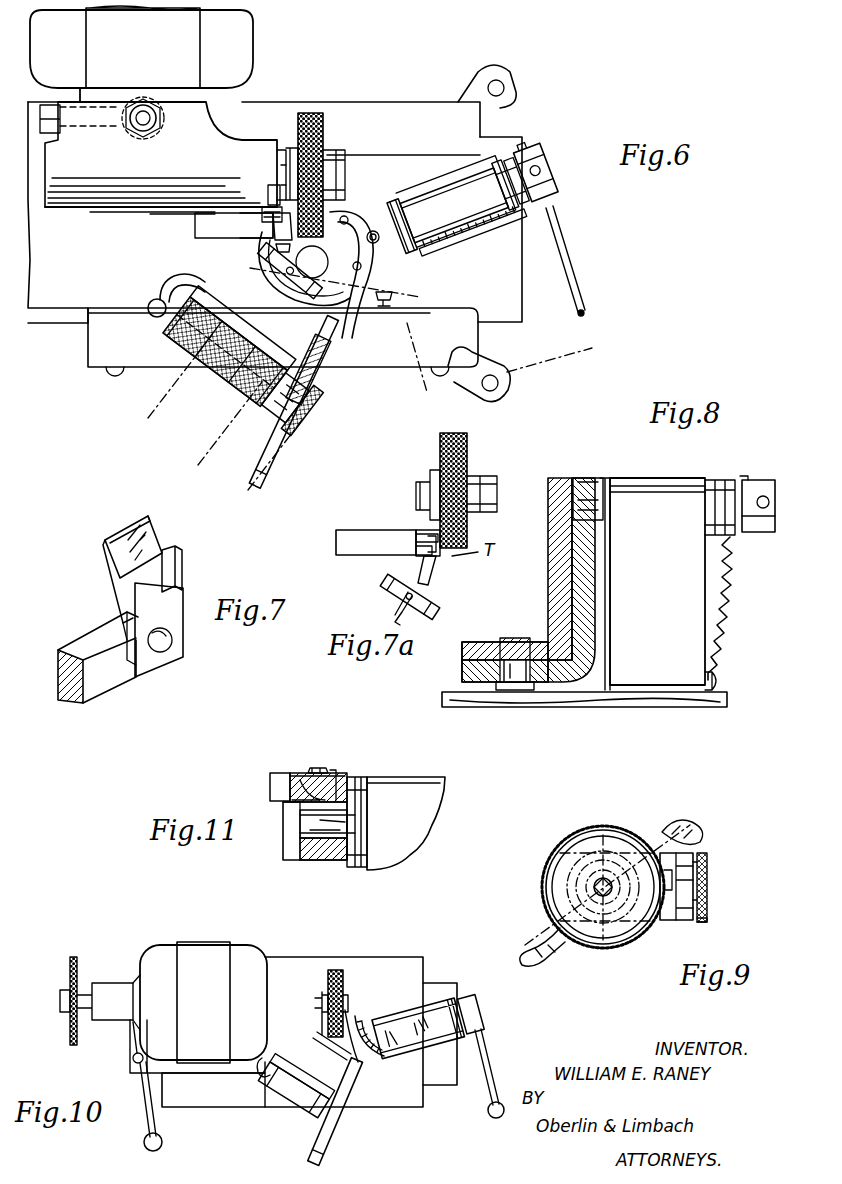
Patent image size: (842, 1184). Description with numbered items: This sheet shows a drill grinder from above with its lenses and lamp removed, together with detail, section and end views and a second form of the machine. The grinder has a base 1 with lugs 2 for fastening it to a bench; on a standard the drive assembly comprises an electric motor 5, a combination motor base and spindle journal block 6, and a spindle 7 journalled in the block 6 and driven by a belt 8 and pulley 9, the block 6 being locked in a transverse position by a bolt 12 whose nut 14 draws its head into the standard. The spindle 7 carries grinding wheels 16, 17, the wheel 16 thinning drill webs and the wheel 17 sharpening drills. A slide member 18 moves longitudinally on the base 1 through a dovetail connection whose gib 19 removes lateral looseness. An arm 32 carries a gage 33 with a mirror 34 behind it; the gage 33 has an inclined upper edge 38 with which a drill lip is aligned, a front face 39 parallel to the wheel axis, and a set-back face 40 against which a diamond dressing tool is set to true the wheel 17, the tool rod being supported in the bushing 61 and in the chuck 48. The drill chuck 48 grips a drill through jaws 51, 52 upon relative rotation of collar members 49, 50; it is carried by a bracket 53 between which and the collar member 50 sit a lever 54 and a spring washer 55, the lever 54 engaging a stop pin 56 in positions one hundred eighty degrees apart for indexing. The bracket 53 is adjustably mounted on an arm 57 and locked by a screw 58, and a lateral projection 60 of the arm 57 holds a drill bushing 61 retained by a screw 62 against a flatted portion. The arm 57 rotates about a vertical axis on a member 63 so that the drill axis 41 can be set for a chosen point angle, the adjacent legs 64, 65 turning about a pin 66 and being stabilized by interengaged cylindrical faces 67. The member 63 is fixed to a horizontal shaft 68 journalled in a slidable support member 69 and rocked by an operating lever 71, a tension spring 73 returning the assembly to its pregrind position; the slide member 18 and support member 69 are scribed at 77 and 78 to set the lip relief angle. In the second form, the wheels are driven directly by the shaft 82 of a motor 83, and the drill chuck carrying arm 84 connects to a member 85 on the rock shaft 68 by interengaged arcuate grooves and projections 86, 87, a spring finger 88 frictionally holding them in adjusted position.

In FIG. 6, the base 1 is at (368, 101).
In FIG. 6, the lugs 2 is at (490, 72).
In FIG. 6, the electric motor 5 is at (254, 58).
In FIG. 6, the combination motor base and spindle journal block 6 is at (220, 148).
In FIG. 6, the spindle 7 is at (282, 140).
In FIG. 6, the belt 8 is at (246, 266).
In FIG. 6, the two-speed pulley 9 is at (135, 409).
In FIG. 6, the bolt 12 is at (138, 126).
In FIG. 6, the nut 14 is at (152, 130).
In FIG. 10, the grinding wheel 16 is at (80, 972).
In FIG. 6, the grinding wheel 17 is at (312, 112).
In FIG. 7A, the grinding wheel 17 is at (470, 446).
In FIG. 10, the grinding wheel 17 is at (341, 970).
In FIG. 6, the slide member 18 is at (510, 292).
In FIG. 6, the gib 19 is at (420, 316).
In FIG. 6, the arm 32 is at (215, 232).
In FIG. 7, the arm 32 is at (105, 688).
In FIG. 7A, the arm 32 is at (336, 543).
In FIG. 6, the gage 33 is at (256, 232).
In FIG. 7, the gage 33 is at (150, 662).
In FIG. 6, the mirror 34 is at (268, 205).
In FIG. 7, the mirror 34 is at (152, 545).
In FIG. 7A, the mirror 34 is at (416, 538).
In FIG. 7, the upper edge 38 is at (118, 580).
In FIG. 7A, the upper edge 38 is at (412, 548).
In FIG. 7, the front face 39 is at (143, 612).
In FIG. 7A, the front face 39 is at (416, 552).
In FIG. 6, the front face 40 is at (272, 192).
In FIG. 7, the front face 40 is at (180, 571).
In FIG. 7A, the front face 40 is at (430, 544).
In FIG. 6, the drill axis 41 is at (242, 396).
In FIG. 6, the drill chuck 48 is at (282, 378).
In FIG. 9, the drill chuck 48 is at (601, 948).
In FIG. 10, the drill chuck 48 is at (310, 1108).
In FIG. 6, the collar member 49 is at (214, 360).
In FIG. 9, the collar member 49 is at (636, 945).
In FIG. 6, the collar member 50 is at (194, 345).
In FIG. 9, the collar member 50 is at (650, 930).
In FIG. 9, the jaw 51 is at (594, 880).
In FIG. 9, the jaw 52 is at (611, 872).
In FIG. 6, the bracket 53 is at (312, 330).
In FIG. 9, the bracket 53 is at (676, 860).
In FIG. 6, the lever 54 is at (160, 300).
In FIG. 9, the lever 54 is at (700, 822).
In FIG. 6, the spring washer 55 is at (205, 278).
In FIG. 6, the stop pin 56 is at (340, 373).
In FIG. 9, the stop pin 56 is at (710, 871).
In FIG. 6, the arm 57 is at (290, 440).
In FIG. 8, the arm 57 is at (556, 578).
In FIG. 6, the screw 58 is at (335, 396).
In FIG. 9, the screw 58 is at (708, 906).
In FIG. 6, the lateral projection 60 is at (332, 280).
In FIG. 7A, the lateral projection 60 is at (440, 594).
In FIG. 6, the drill bushing 61 is at (270, 232).
In FIG. 7A, the drill bushing 61 is at (440, 578).
In FIG. 6, the screw 62 is at (288, 268).
In FIG. 7A, the screw 62 is at (398, 596).
In FIG. 6, the member 63 is at (388, 232).
In FIG. 8, the member 63 is at (588, 606).
In FIG. 8, the leg 64 is at (486, 645).
In FIG. 8, the leg 65 is at (470, 667).
In FIG. 8, the pin 66 is at (513, 686).
In FIG. 6, the cylindrical faces 67 is at (392, 228).
In FIG. 8, the cylindrical faces 67 is at (574, 566).
In FIG. 6, the shaft 68 is at (440, 210).
In FIG. 8, the shaft 68 is at (600, 504).
In FIG. 11, the shaft 68 is at (336, 826).
In FIG. 10, the shaft 68 is at (410, 1012).
In FIG. 6, the slidable support member 69 is at (466, 188).
In FIG. 8, the slidable support member 69 is at (690, 606).
In FIG. 6, the operating lever 71 is at (565, 276).
In FIG. 8, the operating lever 71 is at (766, 490).
In FIG. 8, the tension spring 73 is at (715, 648).
In FIG. 6, the scribed marks 77 is at (486, 262).
In FIG. 6, the scribed marks 78 is at (490, 240).
In FIG. 10, the motor shaft 82 is at (325, 985).
In FIG. 10, the motor 83 is at (204, 944).
In FIG. 11, the drill chuck carrying arm 84 is at (286, 774).
In FIG. 10, the drill chuck carrying arm 84 is at (360, 1085).
In FIG. 11, the member 85 is at (332, 860).
In FIG. 10, the member 85 is at (370, 1018).
In FIG. 11, the arcuate grooves 86 is at (300, 818).
In FIG. 11, the arcuate projections 87 is at (300, 792).
In FIG. 11, the spring finger 88 is at (318, 768).